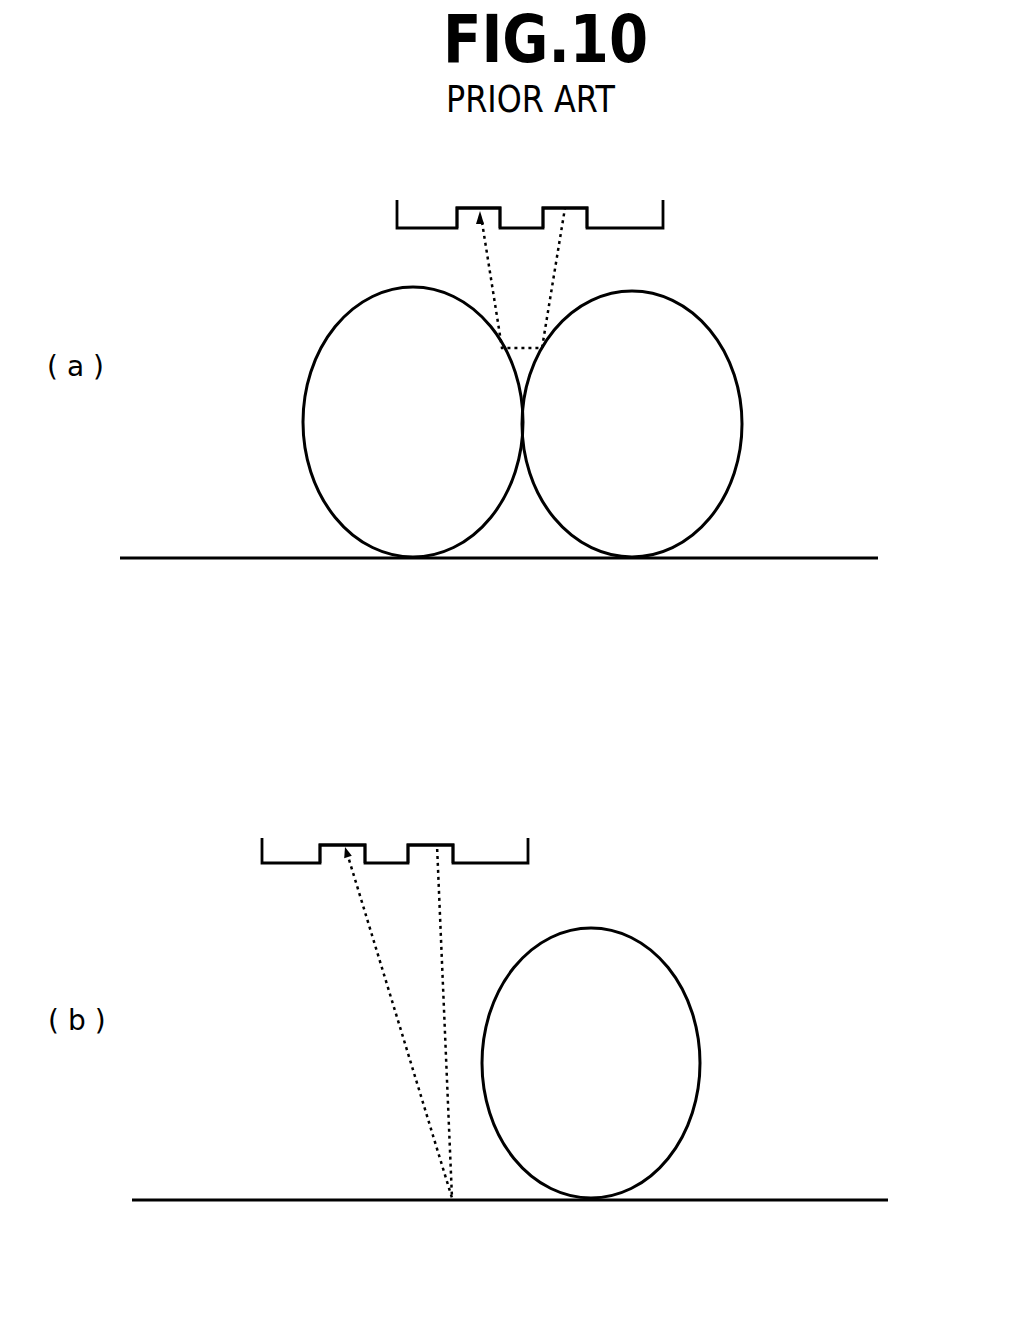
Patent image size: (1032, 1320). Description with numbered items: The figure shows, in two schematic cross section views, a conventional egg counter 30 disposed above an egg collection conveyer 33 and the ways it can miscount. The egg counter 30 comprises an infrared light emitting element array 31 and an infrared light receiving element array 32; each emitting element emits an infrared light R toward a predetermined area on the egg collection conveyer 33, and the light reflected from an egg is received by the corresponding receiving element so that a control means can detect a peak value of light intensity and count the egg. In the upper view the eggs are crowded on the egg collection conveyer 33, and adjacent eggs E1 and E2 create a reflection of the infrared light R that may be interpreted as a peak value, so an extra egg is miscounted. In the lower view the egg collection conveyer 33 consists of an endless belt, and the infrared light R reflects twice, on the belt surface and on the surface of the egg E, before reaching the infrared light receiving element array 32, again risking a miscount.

The egg counter 30 is at (663, 216).
The infrared light emitting element array 31 is at (567, 208).
The infrared light receiving element array 32 is at (487, 208).
The egg collection conveyer 33 is at (208, 557).
The egg E is at (702, 1070).
The adjacent egg E1 is at (742, 423).
The adjacent egg E2 is at (303, 407).
The infrared light R is at (460, 703).